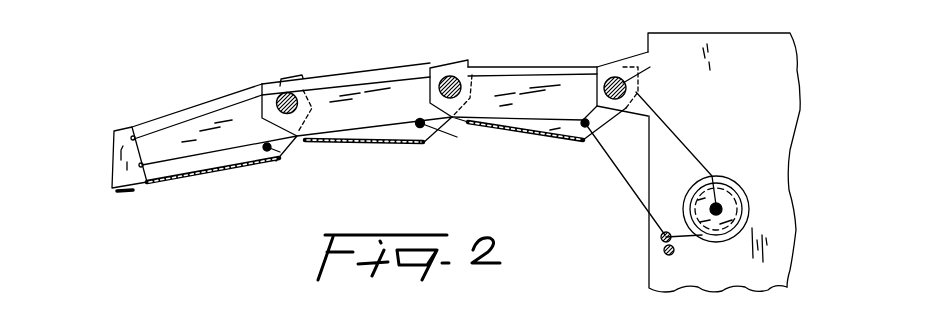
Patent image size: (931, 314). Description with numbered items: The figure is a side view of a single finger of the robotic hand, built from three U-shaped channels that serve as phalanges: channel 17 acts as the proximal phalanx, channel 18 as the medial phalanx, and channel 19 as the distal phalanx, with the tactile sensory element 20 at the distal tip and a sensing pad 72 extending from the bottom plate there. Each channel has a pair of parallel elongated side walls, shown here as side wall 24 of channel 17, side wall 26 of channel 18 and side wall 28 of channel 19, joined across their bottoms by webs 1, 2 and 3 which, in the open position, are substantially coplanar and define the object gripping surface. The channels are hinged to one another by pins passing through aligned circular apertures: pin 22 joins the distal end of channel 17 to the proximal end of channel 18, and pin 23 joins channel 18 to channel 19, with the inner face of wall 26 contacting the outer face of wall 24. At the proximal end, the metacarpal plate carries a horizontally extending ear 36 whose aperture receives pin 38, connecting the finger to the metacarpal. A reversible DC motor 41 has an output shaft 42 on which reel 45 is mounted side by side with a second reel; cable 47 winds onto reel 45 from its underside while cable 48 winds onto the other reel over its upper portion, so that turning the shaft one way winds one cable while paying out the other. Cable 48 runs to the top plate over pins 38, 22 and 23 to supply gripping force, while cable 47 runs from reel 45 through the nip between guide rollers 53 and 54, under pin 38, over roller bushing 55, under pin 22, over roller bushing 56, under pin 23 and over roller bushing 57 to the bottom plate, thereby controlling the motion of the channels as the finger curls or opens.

The web 1 is at (527, 142).
The web 2 is at (372, 146).
The web 3 is at (228, 170).
The U-shaped channel 17 is at (519, 73).
The U-shaped channel 18 is at (382, 67).
The U-shaped channel 19 is at (207, 100).
The tactile sensory element 20 is at (115, 153).
The pin 22 is at (449, 76).
The pin 23 is at (288, 91).
The side wall 24 is at (560, 83).
The side wall 26 is at (345, 78).
The side wall 28 is at (170, 120).
The ear 36 is at (604, 65).
The pin 38 is at (651, 69).
The reversible DC motor 41 is at (749, 211).
The output shaft 42 is at (707, 192).
The reel 45 is at (730, 192).
The cable 47 is at (420, 123).
The cable 48 is at (402, 78).
The guide roller 53 is at (676, 255).
The guide roller 54 is at (660, 240).
The roller bushing 55 is at (280, 152).
The roller bushing 56 is at (449, 142).
The roller bushing 57 is at (585, 130).
The sensing pad 72 is at (120, 191).